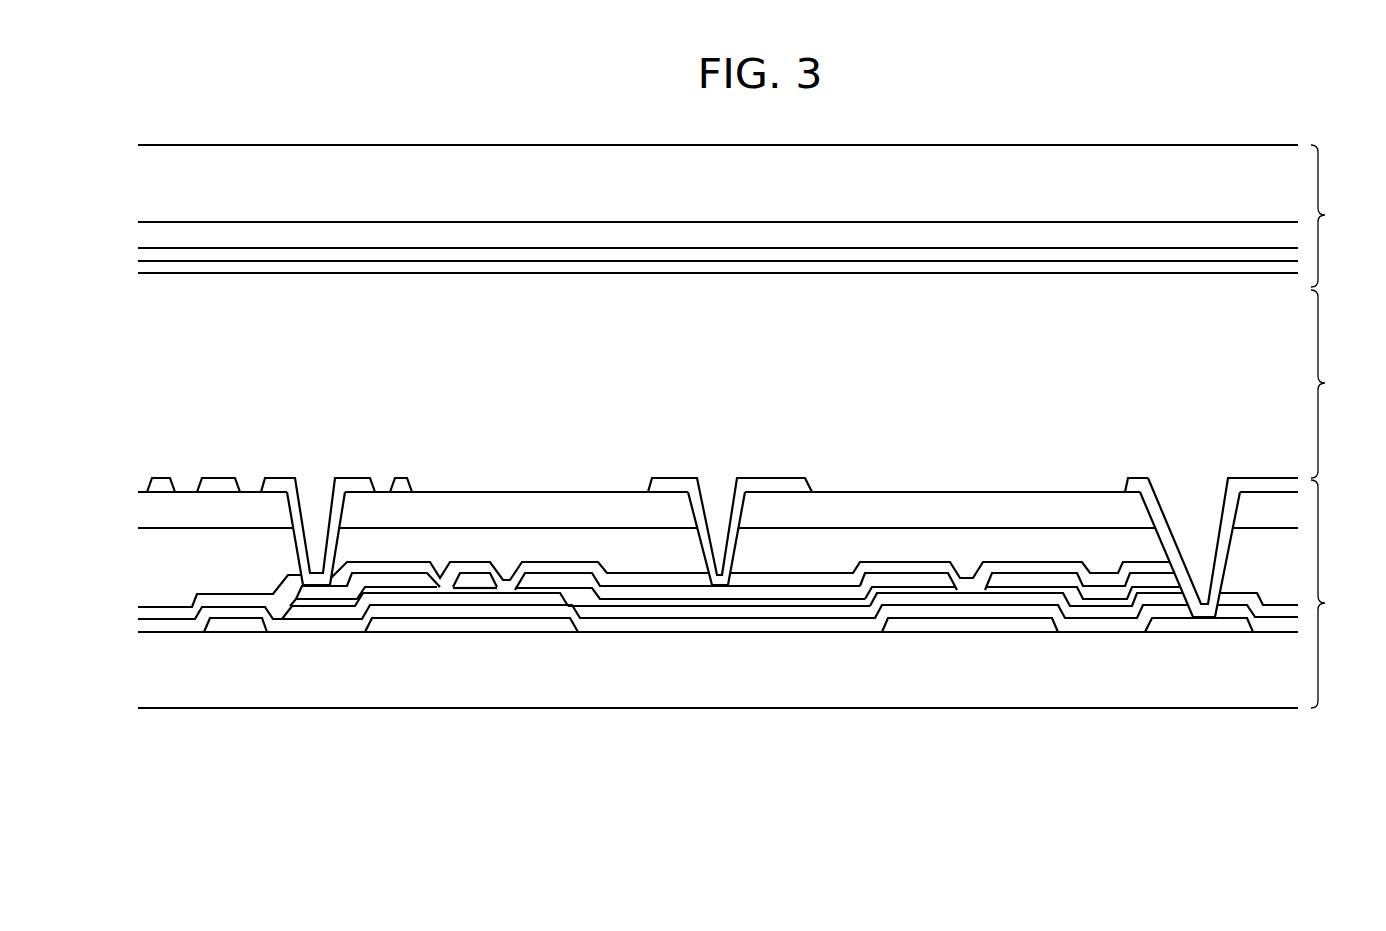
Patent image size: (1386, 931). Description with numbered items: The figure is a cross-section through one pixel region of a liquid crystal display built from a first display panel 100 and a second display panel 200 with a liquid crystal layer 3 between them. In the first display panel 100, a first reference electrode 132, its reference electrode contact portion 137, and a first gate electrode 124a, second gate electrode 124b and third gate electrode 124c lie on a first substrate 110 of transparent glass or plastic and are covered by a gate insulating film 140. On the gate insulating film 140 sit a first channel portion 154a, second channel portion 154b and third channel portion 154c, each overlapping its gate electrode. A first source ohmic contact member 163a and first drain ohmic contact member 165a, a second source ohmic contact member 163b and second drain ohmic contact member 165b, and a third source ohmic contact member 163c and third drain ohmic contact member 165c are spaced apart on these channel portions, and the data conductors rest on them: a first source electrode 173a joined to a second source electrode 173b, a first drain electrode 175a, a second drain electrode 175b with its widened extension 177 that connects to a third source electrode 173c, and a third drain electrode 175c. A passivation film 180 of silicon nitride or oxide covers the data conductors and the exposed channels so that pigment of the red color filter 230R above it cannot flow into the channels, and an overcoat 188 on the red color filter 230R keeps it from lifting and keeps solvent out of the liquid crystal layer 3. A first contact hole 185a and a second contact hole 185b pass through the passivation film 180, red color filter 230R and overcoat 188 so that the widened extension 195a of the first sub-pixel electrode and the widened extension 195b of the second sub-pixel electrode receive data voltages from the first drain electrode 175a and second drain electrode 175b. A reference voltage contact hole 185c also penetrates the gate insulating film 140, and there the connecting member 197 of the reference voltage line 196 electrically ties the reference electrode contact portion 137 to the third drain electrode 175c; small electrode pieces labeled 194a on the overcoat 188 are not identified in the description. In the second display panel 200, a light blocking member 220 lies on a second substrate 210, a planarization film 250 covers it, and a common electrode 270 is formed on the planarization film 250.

The liquid crystal layer 3 is at (1327, 384).
The first display panel 100 is at (1337, 594).
The second display panel 200 is at (1336, 216).
The second substrate 210 is at (700, 163).
The light blocking member 220 is at (825, 235).
The planarization film 250 is at (940, 256).
The common electrode 270 is at (1022, 272).
The first substrate 110 is at (875, 685).
The first reference electrode 132 is at (245, 627).
The first gate electrode 124a is at (438, 627).
The second gate electrode 124b is at (545, 628).
The third gate electrode 124c is at (947, 627).
The reference electrode contact portion 137 is at (1193, 622).
The gate insulating film 140 is at (711, 620).
The first channel portion 154a is at (423, 600).
The second channel portion 154b is at (530, 597).
The third channel portion 154c is at (995, 600).
The first source ohmic contact member 163a is at (470, 594).
The second source ohmic contact member 163b is at (497, 592).
The third source ohmic contact member 163c is at (925, 590).
The first drain ohmic contact member 165a is at (303, 603).
The second drain ohmic contact member 165b is at (556, 600).
The third drain ohmic contact member 165c is at (1035, 593).
The first source electrode 173a is at (450, 570).
The second source electrode 173b is at (486, 572).
The third source electrode 173c is at (903, 578).
The first drain electrode 175a is at (323, 593).
The second drain electrode 175b is at (556, 583).
The third drain electrode 175c is at (1018, 580).
The widened extension 177 is at (777, 598).
The passivation film 180 is at (167, 613).
The overcoat 188 is at (202, 522).
The red color filter 230R is at (1100, 548).
The first contact hole 185a is at (302, 542).
The second contact hole 185b is at (697, 547).
The reference voltage contact hole 185c is at (1157, 542).
The shielding electrode 194a is at (158, 478).
The widened extension of first sub-pixel electrode 195a is at (278, 478).
The widened extension of second sub-pixel electrode 195b is at (668, 478).
The reference voltage line 196 is at (398, 478).
The connecting member 197 is at (1140, 483).